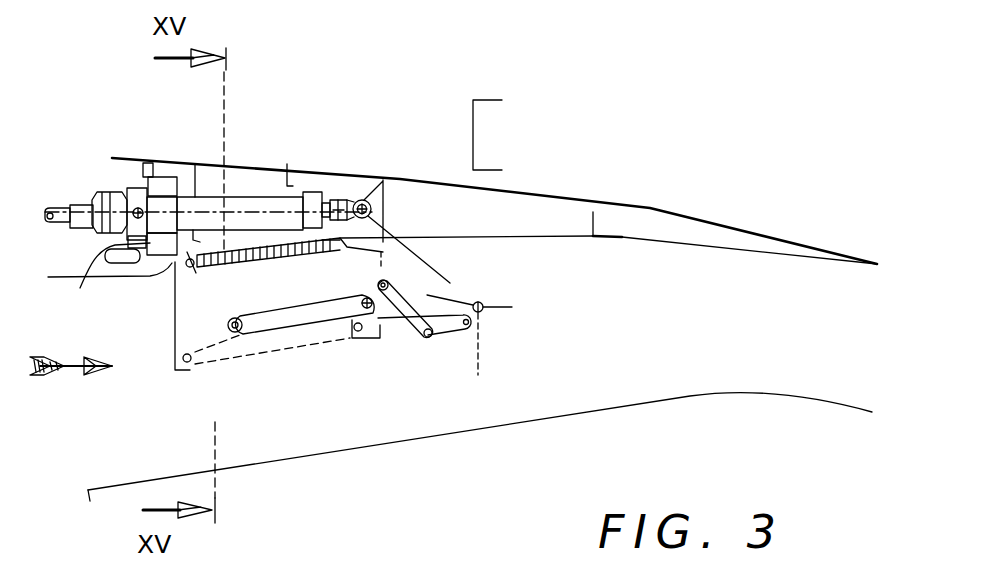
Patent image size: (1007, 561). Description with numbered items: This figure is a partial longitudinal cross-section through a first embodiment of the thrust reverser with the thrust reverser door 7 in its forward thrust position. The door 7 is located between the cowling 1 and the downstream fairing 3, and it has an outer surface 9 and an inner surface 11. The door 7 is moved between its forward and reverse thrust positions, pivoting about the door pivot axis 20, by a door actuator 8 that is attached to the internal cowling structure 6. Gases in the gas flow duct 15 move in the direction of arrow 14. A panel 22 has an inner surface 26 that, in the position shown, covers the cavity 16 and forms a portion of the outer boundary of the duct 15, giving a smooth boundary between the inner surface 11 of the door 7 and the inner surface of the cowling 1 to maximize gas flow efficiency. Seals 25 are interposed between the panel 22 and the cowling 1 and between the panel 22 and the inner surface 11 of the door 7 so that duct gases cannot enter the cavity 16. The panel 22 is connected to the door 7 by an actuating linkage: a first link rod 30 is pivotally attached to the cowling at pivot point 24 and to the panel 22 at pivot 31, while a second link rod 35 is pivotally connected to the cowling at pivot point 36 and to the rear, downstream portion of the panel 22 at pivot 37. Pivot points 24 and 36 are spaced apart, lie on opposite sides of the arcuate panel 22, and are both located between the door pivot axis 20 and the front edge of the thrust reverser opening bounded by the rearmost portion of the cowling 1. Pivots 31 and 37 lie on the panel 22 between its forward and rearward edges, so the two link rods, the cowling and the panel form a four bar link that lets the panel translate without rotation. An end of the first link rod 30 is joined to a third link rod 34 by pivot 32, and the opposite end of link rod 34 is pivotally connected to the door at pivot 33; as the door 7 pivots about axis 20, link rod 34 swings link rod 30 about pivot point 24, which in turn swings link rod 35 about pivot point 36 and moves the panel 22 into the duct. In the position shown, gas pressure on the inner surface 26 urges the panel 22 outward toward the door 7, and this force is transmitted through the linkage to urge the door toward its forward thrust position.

The cowling 1 is at (122, 157).
The downstream fairing 3 is at (673, 225).
The internal cowling structure 6 is at (105, 260).
The thrust reverser door 7 is at (415, 197).
The door actuator 8 is at (250, 188).
The outer surface 9 is at (567, 204).
The inner surface 11 is at (517, 236).
The arrow 14 is at (71, 387).
The gas flow duct 15 is at (749, 323).
The cavity 16 is at (268, 236).
The door pivot axis 20 is at (483, 305).
The panel 22 is at (233, 269).
The pivot point 24 is at (364, 299).
The seals 25 is at (187, 268).
The inner surface 26 is at (299, 252).
The first link rod 30 is at (308, 323).
The pivot 31 is at (233, 333).
The pivot 32 is at (428, 337).
The pivot 33 is at (387, 282).
The third link rod 34 is at (403, 301).
The second link rod 35 is at (452, 323).
The pivot point 36 is at (470, 326).
The pivot 37 is at (363, 341).